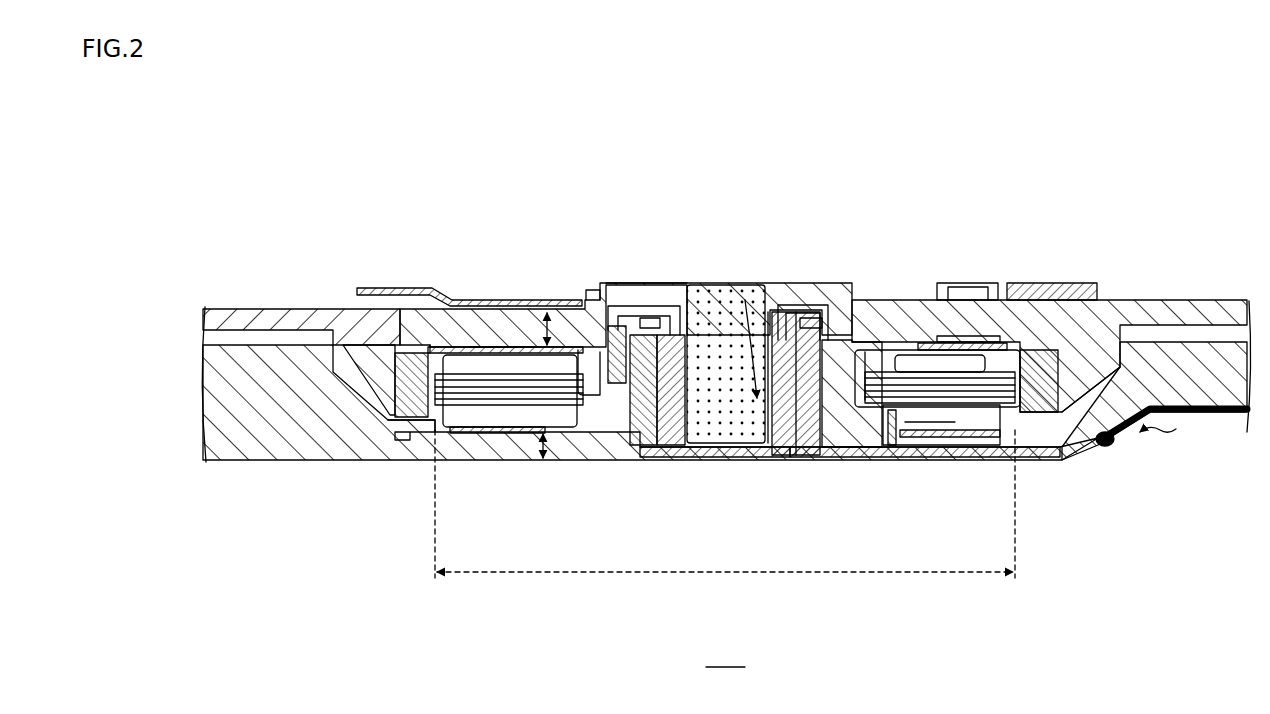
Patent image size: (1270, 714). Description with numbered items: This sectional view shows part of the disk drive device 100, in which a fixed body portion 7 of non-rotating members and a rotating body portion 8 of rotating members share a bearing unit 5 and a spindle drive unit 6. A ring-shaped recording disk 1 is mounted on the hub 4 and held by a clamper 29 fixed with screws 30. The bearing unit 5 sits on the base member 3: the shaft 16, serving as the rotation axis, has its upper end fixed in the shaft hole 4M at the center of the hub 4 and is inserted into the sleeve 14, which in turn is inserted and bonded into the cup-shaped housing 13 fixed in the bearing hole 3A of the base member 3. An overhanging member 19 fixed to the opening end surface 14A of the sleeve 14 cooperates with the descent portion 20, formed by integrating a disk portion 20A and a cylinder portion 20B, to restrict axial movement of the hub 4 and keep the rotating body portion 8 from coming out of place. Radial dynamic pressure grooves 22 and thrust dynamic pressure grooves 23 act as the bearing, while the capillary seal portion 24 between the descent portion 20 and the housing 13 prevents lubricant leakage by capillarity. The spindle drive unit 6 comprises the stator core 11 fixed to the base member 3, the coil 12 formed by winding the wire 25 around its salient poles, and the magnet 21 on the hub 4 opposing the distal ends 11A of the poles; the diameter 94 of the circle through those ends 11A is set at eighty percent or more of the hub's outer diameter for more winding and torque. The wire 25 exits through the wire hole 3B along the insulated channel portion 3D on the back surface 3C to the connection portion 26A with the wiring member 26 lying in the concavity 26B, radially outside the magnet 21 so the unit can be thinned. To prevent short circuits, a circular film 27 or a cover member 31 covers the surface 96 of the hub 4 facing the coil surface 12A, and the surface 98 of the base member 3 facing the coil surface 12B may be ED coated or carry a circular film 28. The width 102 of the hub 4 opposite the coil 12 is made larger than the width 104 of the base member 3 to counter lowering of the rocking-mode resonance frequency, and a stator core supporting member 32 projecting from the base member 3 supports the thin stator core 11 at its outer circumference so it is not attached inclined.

The recording disk 1 is at (238, 309).
The base member 3 is at (222, 462).
The bearing hole 3A is at (812, 442).
The wire hole 3B is at (878, 442).
The back surface 3C is at (312, 462).
The channel portion 3D is at (968, 440).
The hub 4 is at (470, 322).
The shaft hole 4M is at (684, 284).
The bearing unit 5 is at (706, 462).
The spindle drive unit 6 is at (444, 360).
The fixed body portion 7 is at (778, 462).
The rotating body portion 8 is at (880, 262).
The stator core 11 is at (478, 394).
The distal ends of salient poles 11A is at (415, 432).
The coil 12 is at (568, 410).
The surface of the coil 12A is at (960, 438).
The surface of the coil 12B is at (914, 344).
The housing 13 is at (642, 447).
The sleeve 14 is at (668, 447).
The opening end surface 14A is at (782, 330).
The shaft 16 is at (718, 310).
The overhanging member 19 is at (812, 305).
The descent portion 20 is at (606, 289).
The disk portion 20A is at (648, 306).
The cylinder portion 20B is at (580, 312).
The magnet 21 is at (1062, 432).
The radial dynamic pressure groove 22 is at (745, 300).
The thrust dynamic pressure groove 23 is at (830, 326).
The capillary seal portion 24 is at (840, 442).
The wire 25 is at (935, 408).
The wiring member 26 is at (1200, 415).
The connection portion 26A is at (1108, 452).
The concavity 26B is at (1150, 434).
The circular film 27 is at (490, 330).
The circular film 28 is at (498, 433).
The clamper 29 is at (388, 289).
The screws 30 is at (975, 283).
The cover member 31 is at (1037, 300).
The stator core supporting member 32 is at (1026, 447).
The diameter 94 is at (818, 574).
The surface of the hub 96 is at (522, 338).
The surface of the base member 98 is at (920, 442).
The disk drive device 100 is at (725, 656).
The width 102 is at (547, 312).
The width 104 is at (543, 462).